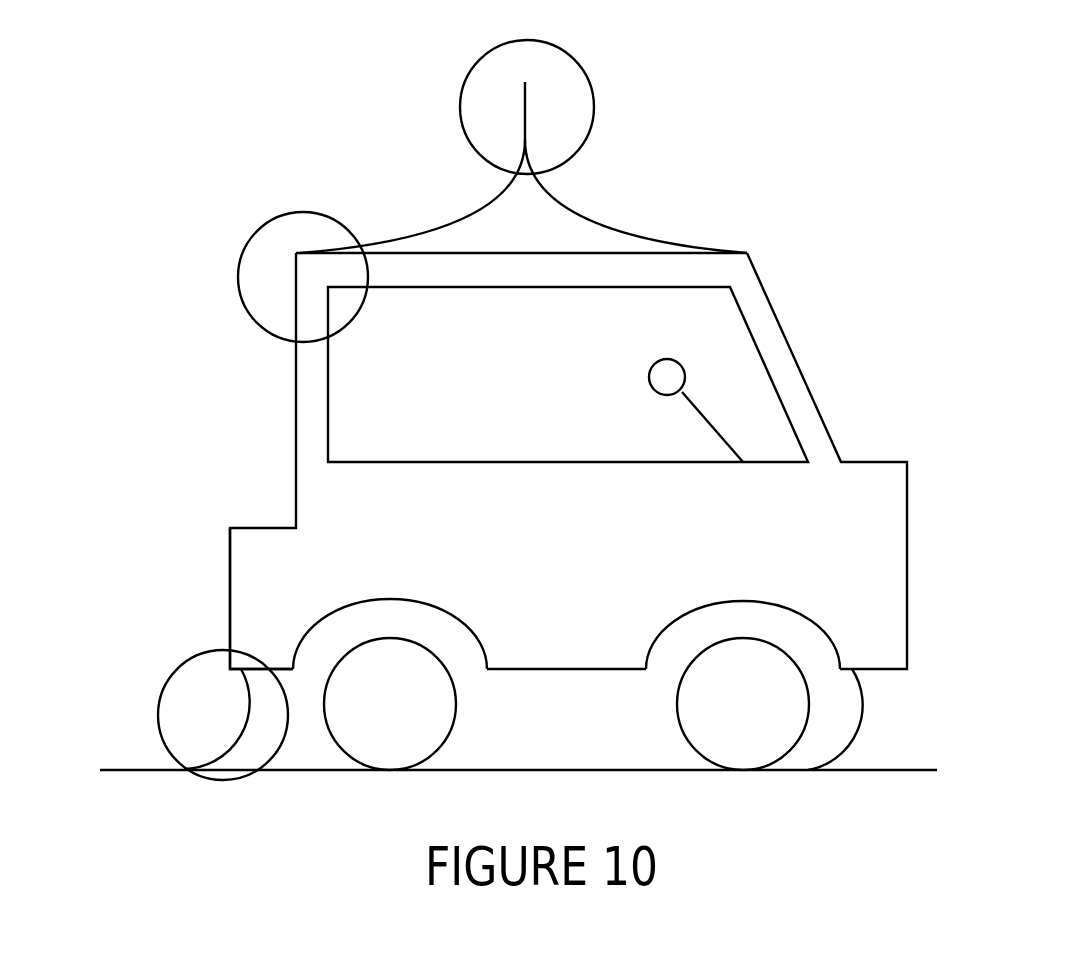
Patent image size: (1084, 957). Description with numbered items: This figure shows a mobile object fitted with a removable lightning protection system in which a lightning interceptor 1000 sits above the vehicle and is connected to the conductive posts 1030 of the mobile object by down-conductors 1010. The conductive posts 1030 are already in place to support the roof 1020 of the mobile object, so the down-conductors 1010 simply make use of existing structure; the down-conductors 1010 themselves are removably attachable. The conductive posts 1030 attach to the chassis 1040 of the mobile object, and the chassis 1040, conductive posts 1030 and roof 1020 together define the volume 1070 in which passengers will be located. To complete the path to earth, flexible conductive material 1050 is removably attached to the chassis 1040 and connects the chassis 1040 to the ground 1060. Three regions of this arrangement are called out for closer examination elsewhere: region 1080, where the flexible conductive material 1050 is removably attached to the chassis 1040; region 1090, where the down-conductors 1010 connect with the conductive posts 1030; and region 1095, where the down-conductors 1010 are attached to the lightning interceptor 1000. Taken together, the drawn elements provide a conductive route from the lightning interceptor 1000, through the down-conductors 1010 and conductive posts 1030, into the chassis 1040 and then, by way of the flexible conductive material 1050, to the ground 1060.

The lightning interceptor 1000 is at (525, 110).
The down-conductors 1010 is at (467, 213).
The roof 1020 is at (732, 272).
The conductive posts 1030 is at (800, 367).
The chassis 1040 is at (228, 600).
The flexible conductive material 1050 is at (245, 730).
The ground 1060 is at (860, 775).
The volume 1070 is at (622, 410).
The region 1080 is at (158, 705).
The region 1090 is at (258, 228).
The region 1095 is at (477, 62).